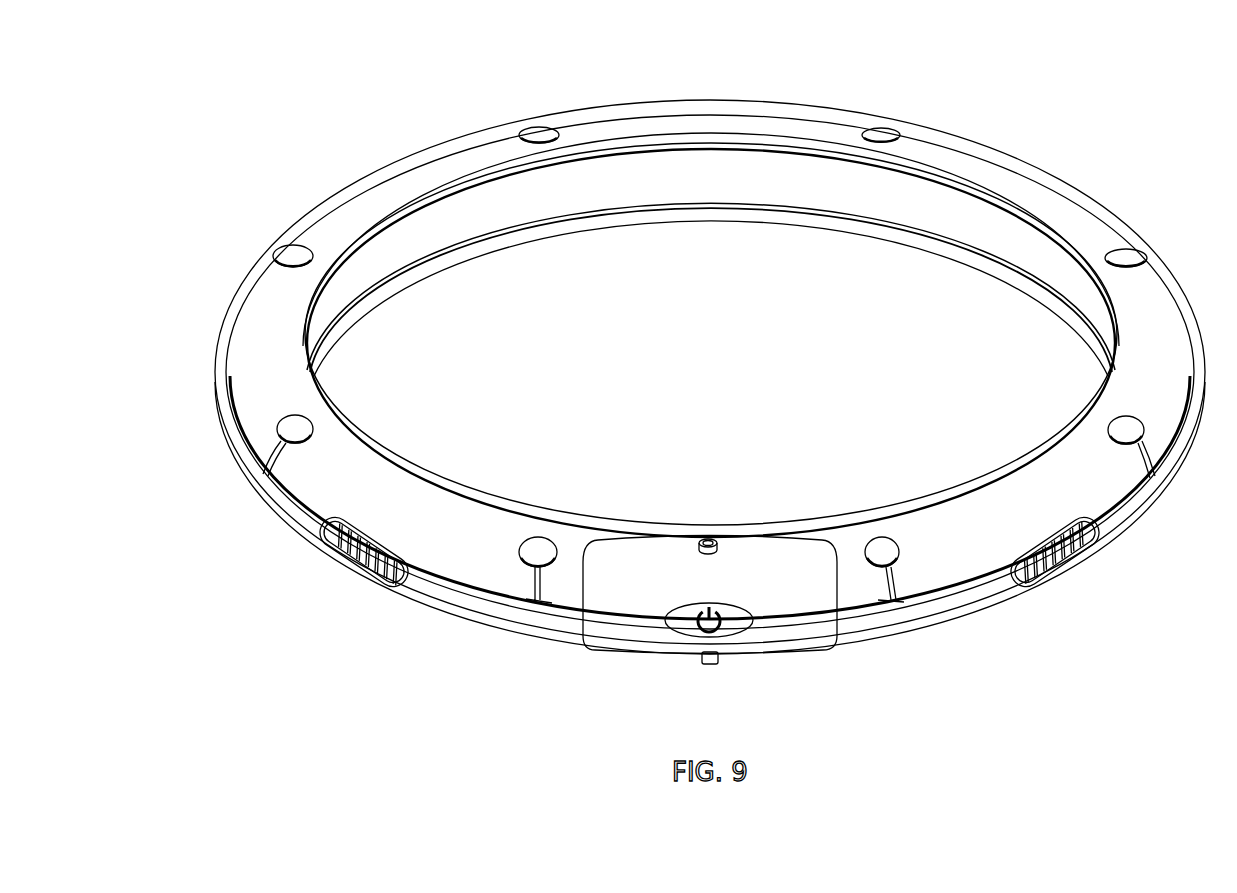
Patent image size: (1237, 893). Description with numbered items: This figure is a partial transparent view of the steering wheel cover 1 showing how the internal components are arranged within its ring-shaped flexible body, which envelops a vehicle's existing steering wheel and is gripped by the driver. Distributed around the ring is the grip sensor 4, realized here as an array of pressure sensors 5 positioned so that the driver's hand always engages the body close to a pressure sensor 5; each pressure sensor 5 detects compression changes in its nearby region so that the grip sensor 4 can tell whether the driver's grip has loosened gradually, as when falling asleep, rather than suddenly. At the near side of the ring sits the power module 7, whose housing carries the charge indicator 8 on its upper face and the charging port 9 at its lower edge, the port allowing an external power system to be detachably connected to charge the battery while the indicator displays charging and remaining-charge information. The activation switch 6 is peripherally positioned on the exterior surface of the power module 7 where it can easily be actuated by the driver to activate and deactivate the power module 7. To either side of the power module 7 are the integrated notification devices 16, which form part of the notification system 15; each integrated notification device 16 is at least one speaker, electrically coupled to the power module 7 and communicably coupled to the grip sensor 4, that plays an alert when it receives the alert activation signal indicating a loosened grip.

The steering wheel cover 1 is at (466, 85).
The grip sensor 4 is at (1031, 175).
The pressure sensor 5 is at (538, 128).
The activation switch 6 is at (760, 640).
The power module 7 is at (666, 528).
The charge indicator 8 is at (718, 541).
The charging port 9 is at (704, 665).
The notification system 15 is at (335, 578).
The integrated notification device 16 is at (405, 556).